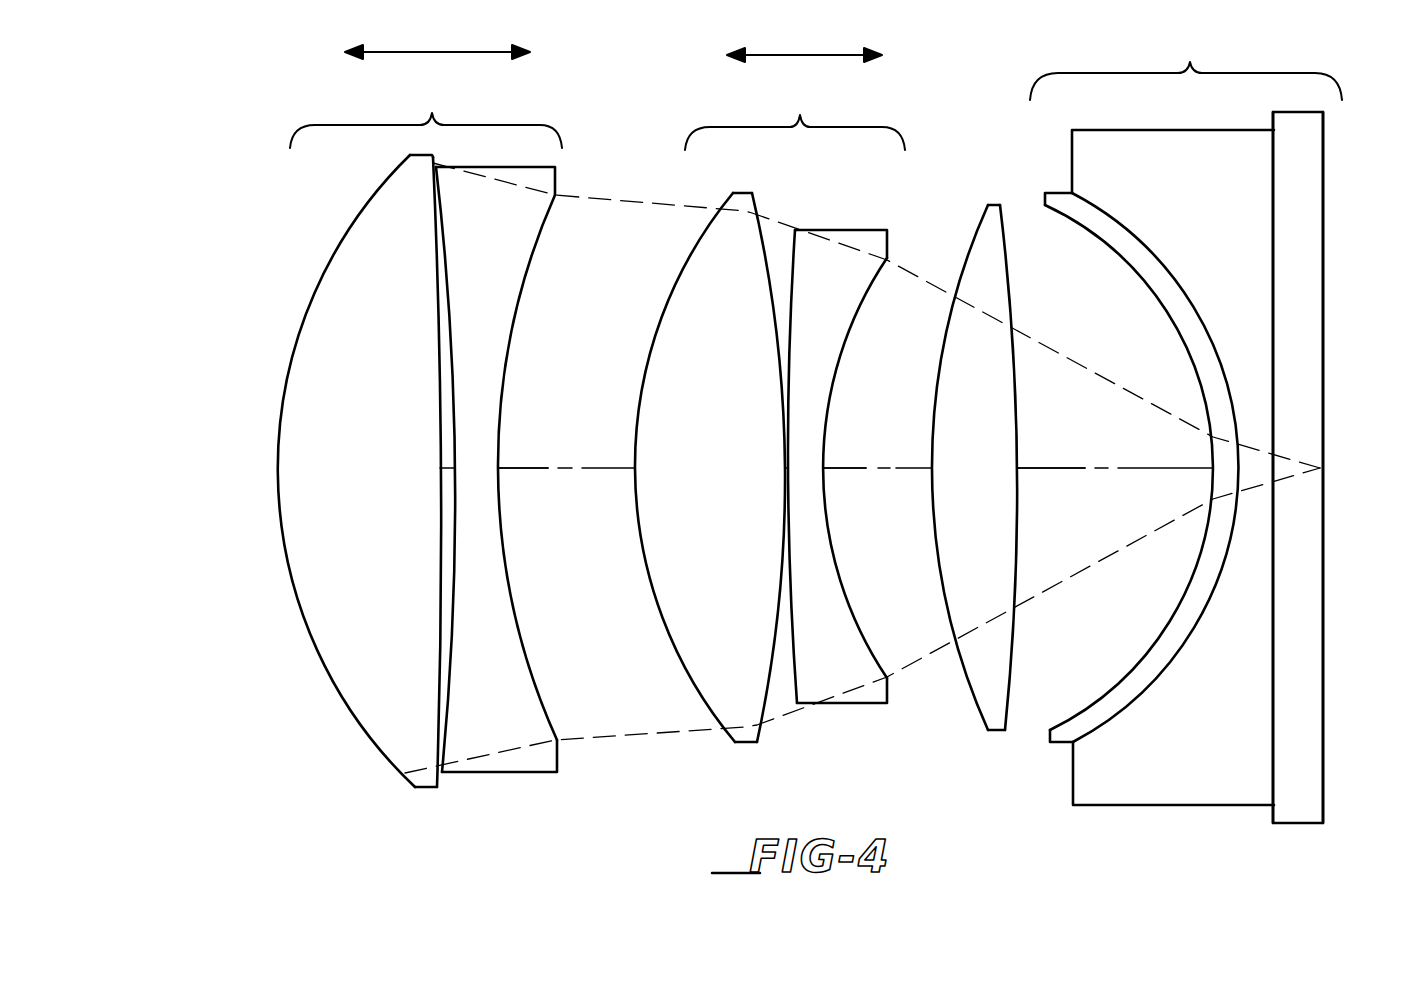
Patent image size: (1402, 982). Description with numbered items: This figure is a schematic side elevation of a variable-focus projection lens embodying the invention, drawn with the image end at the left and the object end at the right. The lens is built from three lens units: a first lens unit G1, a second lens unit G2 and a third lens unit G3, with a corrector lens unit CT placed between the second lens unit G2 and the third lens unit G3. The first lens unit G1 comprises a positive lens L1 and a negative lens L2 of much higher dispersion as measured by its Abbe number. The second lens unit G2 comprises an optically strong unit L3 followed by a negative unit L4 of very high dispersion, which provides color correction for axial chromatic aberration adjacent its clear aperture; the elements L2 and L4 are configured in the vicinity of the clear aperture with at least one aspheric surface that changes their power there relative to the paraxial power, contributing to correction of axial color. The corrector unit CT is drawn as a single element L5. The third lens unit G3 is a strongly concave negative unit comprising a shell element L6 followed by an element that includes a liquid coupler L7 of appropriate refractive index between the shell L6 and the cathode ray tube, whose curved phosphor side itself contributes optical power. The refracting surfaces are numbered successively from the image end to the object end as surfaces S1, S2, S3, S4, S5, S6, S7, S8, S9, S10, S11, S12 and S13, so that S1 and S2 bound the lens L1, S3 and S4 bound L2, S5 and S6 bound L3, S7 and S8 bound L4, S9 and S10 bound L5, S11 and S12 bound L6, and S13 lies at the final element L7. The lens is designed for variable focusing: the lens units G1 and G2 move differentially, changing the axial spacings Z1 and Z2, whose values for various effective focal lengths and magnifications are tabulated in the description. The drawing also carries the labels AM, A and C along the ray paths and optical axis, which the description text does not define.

The first lens unit G1 is at (408, 416).
The second lens unit G2 is at (749, 395).
The third lens unit G3 is at (1213, 433).
The positive lens L1 is at (340, 471).
The negative lens L2 is at (507, 469).
The optically strong unit L3 is at (689, 467).
The negative unit L4 is at (806, 447).
The lens element L5 is at (980, 437).
The shell element L6 is at (1159, 467).
The liquid coupler L7 is at (1327, 467).
The first lens surface S1 is at (309, 637).
The second lens surface S2 is at (440, 510).
The third lens surface S3 is at (447, 558).
The fourth lens surface S4 is at (512, 600).
The fifth lens surface S5 is at (655, 600).
The sixth lens surface S6 is at (770, 662).
The seventh lens surface S7 is at (786, 592).
The eighth lens surface S8 is at (835, 560).
The ninth lens surface S9 is at (941, 578).
The tenth lens surface S10 is at (1019, 523).
The eleventh lens surface S11 is at (1182, 598).
The twelfth lens surface S12 is at (1166, 667).
The thirteenth lens surface S13 is at (1270, 690).
The axial marginal ray AM is at (623, 203).
The corrector lens unit CT is at (993, 203).
The variable air space Z1 is at (538, 468).
The variable air space Z2 is at (870, 468).
The air space A is at (1120, 468).
The cover plate C is at (1318, 617).